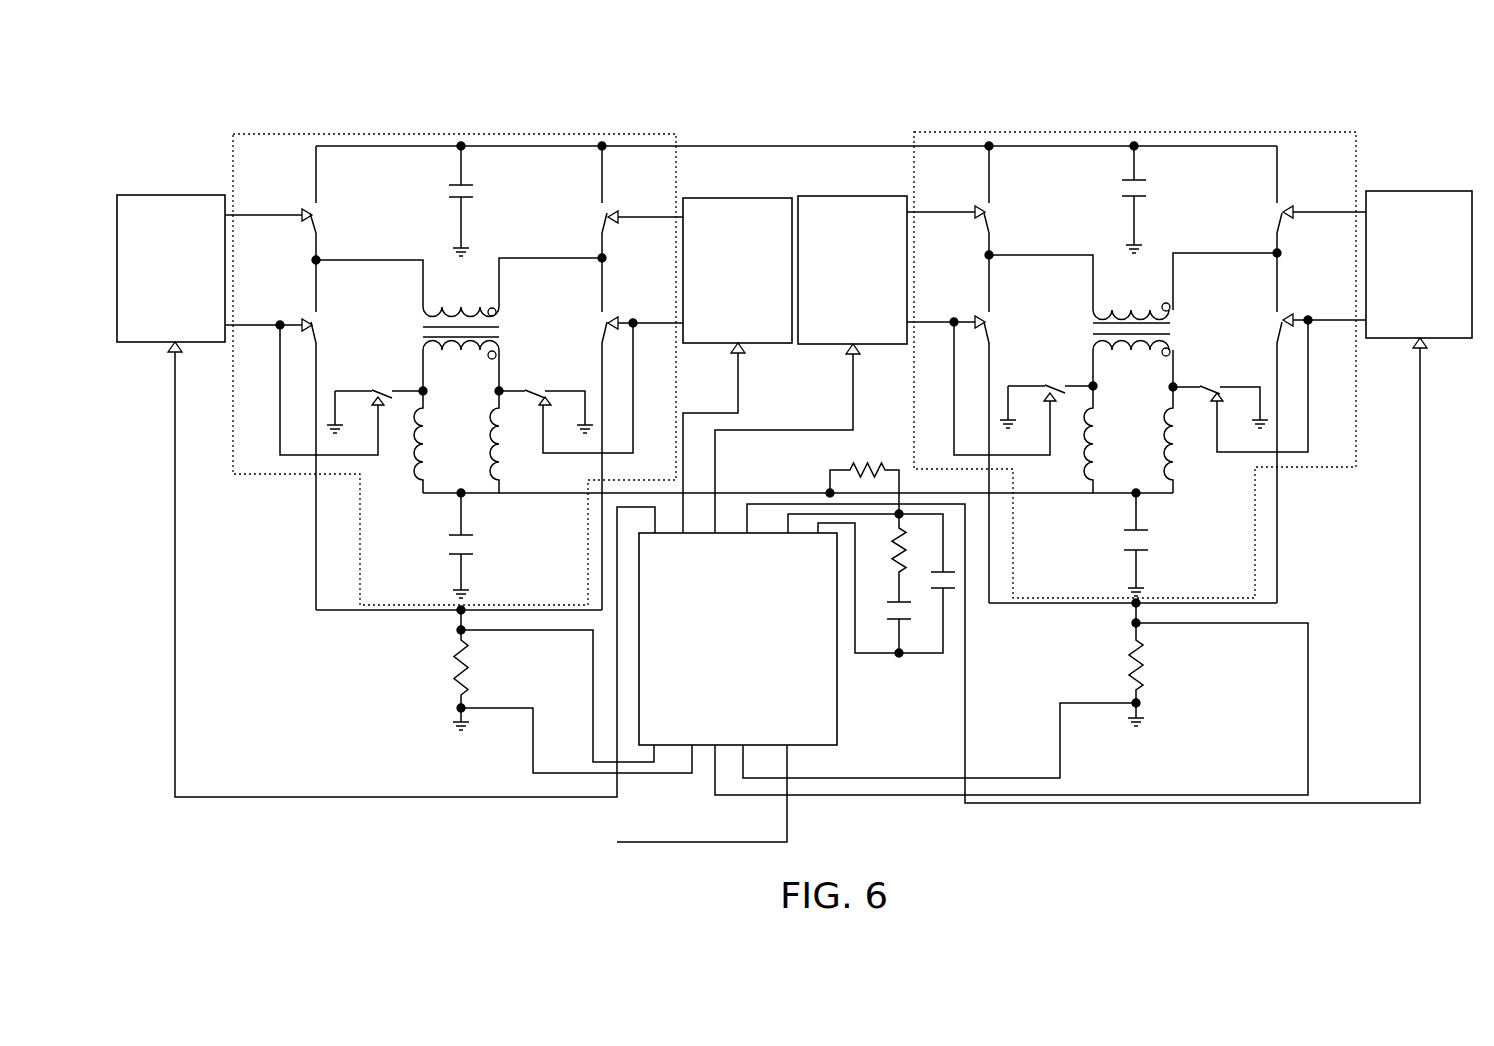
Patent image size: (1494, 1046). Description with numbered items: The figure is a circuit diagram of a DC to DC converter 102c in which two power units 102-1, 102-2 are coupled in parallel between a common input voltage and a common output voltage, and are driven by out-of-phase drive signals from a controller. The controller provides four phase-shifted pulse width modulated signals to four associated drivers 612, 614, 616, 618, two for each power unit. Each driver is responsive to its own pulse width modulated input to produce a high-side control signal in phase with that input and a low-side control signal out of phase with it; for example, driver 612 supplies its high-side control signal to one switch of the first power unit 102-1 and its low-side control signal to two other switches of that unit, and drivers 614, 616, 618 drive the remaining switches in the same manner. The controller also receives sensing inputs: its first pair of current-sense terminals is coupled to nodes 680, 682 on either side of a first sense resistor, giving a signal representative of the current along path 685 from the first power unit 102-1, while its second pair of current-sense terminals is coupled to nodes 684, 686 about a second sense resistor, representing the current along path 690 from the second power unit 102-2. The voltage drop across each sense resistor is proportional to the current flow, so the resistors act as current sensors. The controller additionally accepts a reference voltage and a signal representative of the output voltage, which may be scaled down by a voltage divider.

The DC to DC converter 102c is at (208, 110).
The first power unit 102-1 is at (402, 134).
The second power unit 102-2 is at (1140, 106).
The driver 612 is at (128, 342).
The driver 614 is at (718, 344).
The driver 616 is at (823, 344).
The driver 618 is at (1393, 340).
The node 680 is at (461, 630).
The node 682 is at (461, 708).
The node 684 is at (1136, 623).
The current path 685 is at (461, 612).
The node 686 is at (1136, 703).
The current path 690 is at (1136, 605).